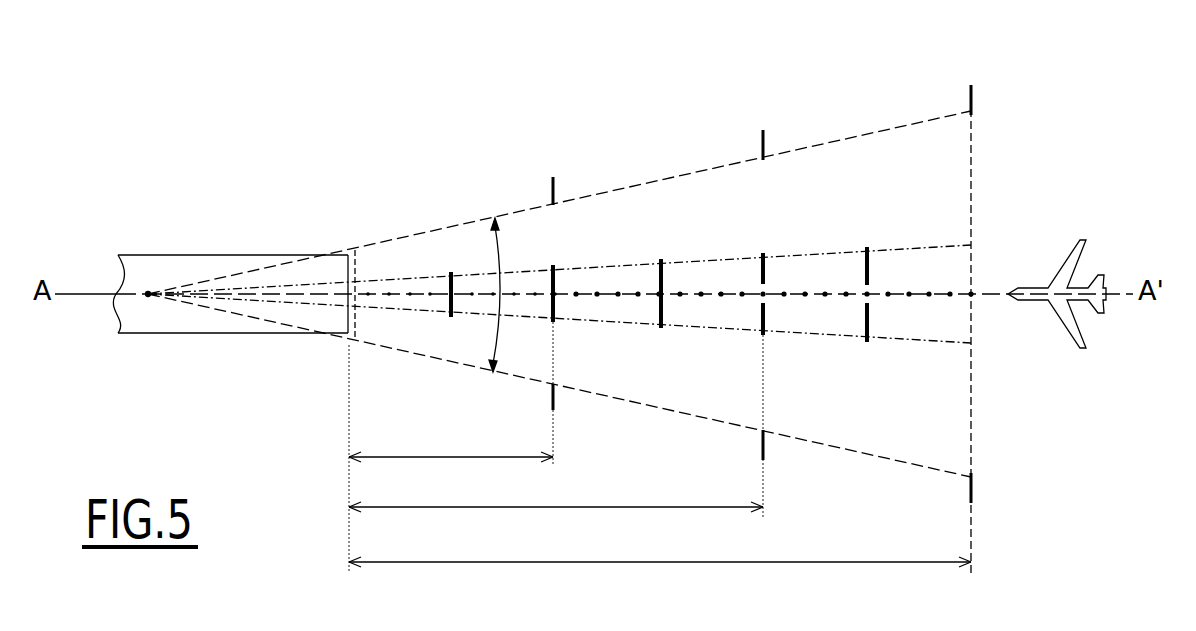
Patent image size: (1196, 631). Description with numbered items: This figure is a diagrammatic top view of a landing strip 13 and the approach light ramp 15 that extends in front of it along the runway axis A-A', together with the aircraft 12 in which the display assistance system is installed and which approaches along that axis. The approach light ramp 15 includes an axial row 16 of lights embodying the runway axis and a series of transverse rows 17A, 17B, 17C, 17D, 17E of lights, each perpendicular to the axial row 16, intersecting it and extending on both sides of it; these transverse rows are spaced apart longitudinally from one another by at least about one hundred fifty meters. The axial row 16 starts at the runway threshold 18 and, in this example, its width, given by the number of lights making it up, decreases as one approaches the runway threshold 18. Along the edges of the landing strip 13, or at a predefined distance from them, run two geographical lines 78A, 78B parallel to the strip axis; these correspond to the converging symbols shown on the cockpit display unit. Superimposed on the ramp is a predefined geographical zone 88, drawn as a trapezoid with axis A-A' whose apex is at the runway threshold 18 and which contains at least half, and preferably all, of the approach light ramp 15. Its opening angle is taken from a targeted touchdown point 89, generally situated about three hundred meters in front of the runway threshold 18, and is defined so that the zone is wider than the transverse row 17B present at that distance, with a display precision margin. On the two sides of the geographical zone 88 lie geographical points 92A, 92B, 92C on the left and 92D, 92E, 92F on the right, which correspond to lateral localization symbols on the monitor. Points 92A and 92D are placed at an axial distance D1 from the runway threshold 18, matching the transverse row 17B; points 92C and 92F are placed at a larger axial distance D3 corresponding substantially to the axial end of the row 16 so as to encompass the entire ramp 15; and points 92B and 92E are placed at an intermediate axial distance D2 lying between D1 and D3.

The aircraft 12 is at (1090, 253).
The landing strip 13 is at (230, 300).
The approach light ramp 15 is at (791, 196).
The axial row of lights 16 is at (987, 304).
The transverse row of lights 17A is at (449, 277).
The transverse row of lights 17B is at (551, 284).
The transverse row of lights 17C is at (659, 267).
The transverse row of lights 17D is at (761, 269).
The transverse row of lights 17E is at (865, 261).
The runway threshold 18 is at (357, 262).
The geographical line 78A is at (150, 336).
The geographical line 78B is at (193, 255).
The geographical zone 88 is at (973, 162).
The targeted touchdown point 89 is at (148, 292).
The geographical point 92A is at (552, 388).
The geographical point 92B is at (762, 433).
The geographical point 92C is at (969, 476).
The geographical point 92D is at (552, 201).
The geographical point 92E is at (762, 158).
The geographical point 92F is at (970, 112).
The axial distance D1 is at (427, 455).
The axial distance D2 is at (592, 505).
The axial distance D3 is at (598, 561).